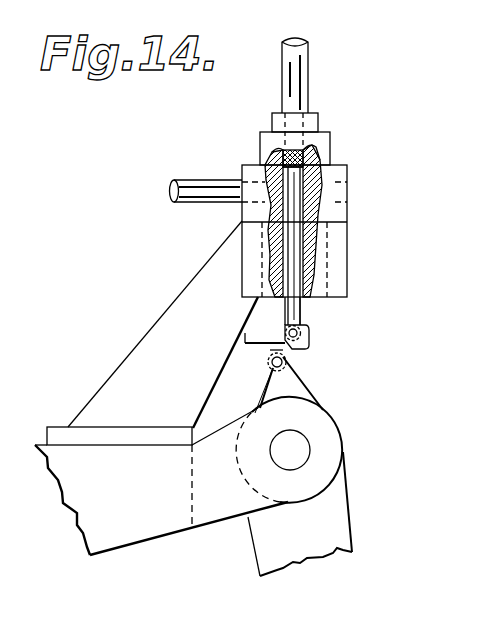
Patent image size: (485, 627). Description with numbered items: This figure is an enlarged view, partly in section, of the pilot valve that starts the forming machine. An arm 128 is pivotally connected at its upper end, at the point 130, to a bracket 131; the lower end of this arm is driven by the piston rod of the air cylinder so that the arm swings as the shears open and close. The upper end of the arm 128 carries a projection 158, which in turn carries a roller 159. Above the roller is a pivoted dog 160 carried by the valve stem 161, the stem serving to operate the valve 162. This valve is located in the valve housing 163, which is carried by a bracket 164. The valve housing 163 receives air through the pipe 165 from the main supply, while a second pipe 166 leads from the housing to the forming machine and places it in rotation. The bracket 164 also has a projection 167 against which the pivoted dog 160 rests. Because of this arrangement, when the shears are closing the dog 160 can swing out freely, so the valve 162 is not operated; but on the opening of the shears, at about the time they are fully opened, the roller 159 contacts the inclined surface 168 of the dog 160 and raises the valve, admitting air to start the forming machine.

The arm 128 is at (333, 527).
The pivotal connection 130 is at (300, 450).
The bracket 131 is at (146, 481).
The projection 158 is at (271, 364).
The roller 159 is at (270, 350).
The pivoted dog 160 is at (285, 333).
The valve stem 161 is at (293, 256).
The valve 162 is at (298, 163).
The valve housing 163 is at (337, 182).
The bracket 164 is at (197, 295).
The pipe 165 is at (296, 73).
The pipe 166 is at (219, 185).
The projection 167 is at (283, 315).
The inclined surface 168 is at (300, 330).